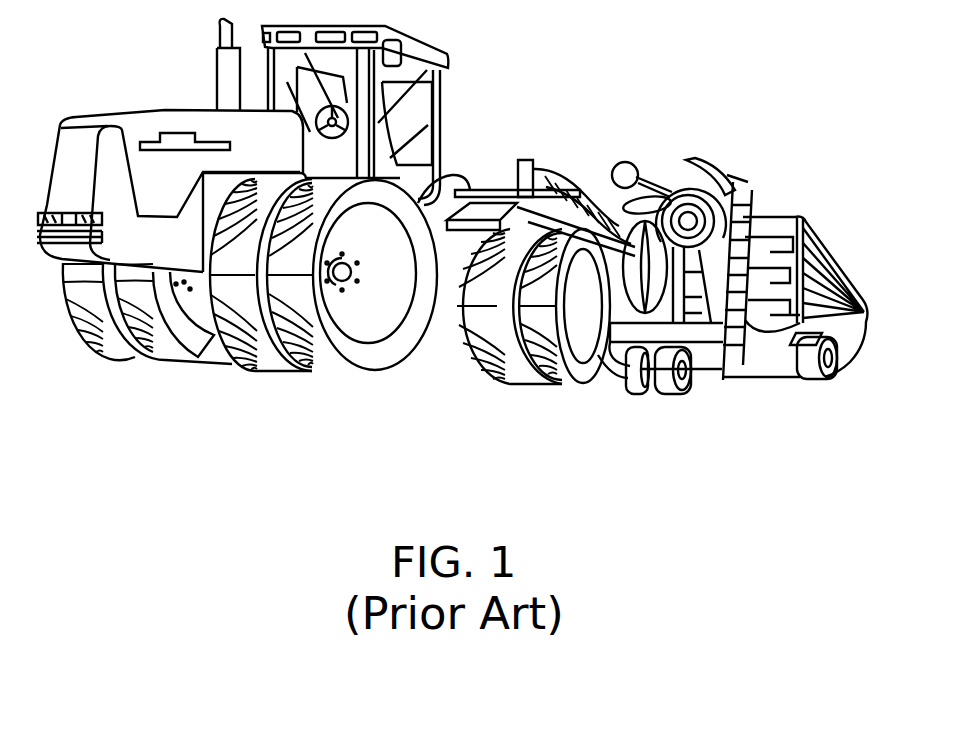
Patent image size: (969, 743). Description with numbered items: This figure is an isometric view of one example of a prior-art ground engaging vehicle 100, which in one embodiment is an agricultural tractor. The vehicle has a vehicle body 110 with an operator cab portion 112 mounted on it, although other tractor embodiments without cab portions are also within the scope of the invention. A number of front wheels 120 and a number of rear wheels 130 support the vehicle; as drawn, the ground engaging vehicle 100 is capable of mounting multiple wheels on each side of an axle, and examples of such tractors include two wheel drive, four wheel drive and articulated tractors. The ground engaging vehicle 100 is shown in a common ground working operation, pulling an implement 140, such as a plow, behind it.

The ground engaging vehicle 100 is at (605, 103).
The vehicle body 110 is at (148, 122).
The operator cab portion 112 is at (423, 105).
The front wheels 120 is at (378, 327).
The rear wheels 130 is at (580, 347).
The implement 140 is at (725, 185).